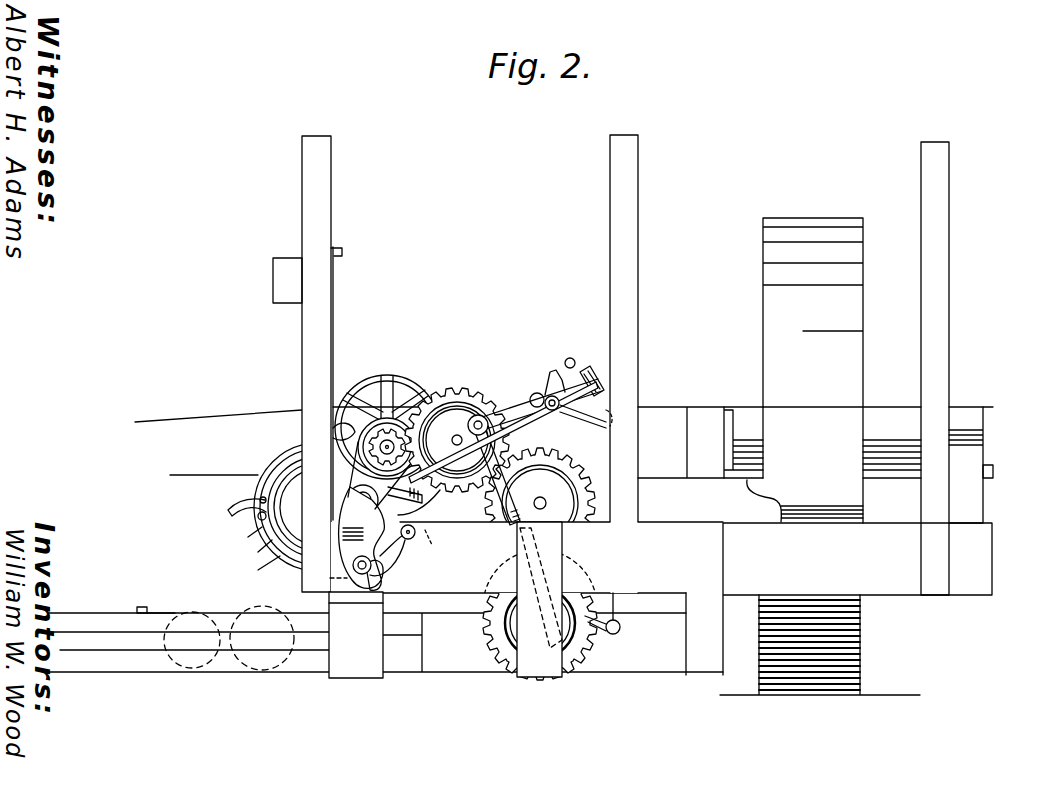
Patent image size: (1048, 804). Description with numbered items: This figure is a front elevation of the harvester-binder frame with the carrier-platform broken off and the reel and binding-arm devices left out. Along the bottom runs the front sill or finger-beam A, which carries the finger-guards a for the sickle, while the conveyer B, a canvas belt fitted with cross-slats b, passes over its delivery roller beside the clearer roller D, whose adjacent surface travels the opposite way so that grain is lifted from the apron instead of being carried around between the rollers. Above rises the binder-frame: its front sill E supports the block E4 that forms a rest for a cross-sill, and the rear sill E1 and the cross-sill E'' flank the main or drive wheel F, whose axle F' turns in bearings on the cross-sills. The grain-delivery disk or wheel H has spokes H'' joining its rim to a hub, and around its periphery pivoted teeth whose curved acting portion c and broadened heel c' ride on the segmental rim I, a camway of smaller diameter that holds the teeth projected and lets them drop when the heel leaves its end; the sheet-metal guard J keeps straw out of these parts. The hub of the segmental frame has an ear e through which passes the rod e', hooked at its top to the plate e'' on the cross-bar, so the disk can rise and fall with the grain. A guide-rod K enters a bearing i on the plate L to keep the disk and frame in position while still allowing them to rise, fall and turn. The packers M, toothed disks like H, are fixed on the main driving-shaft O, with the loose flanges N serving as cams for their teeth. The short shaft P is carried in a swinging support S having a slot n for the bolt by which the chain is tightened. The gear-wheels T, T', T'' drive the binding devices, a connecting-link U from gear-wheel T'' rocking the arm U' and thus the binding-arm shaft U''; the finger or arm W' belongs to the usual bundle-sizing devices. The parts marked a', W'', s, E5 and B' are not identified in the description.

The front sill or finger-beam A is at (384, 642).
The conveyer B is at (161, 602).
The cross-slats b is at (140, 602).
The acting portion of tooth c is at (247, 500).
The heel of tooth c' is at (192, 640).
The clearer roller D is at (262, 638).
The ear or projection e is at (277, 446).
The rod e' is at (342, 383).
The plate e'' is at (349, 251).
The finger-guards a is at (625, 365).
The block a' is at (287, 280).
The disk or wheel H is at (318, 506).
The arms or spokes H'' is at (290, 511).
The guard J is at (247, 535).
The segmental rim or flange I is at (259, 549).
The short shaft P is at (316, 531).
The packers M is at (386, 378).
The flanges N is at (374, 441).
The main driving-shaft O is at (385, 438).
The finger or arm W' is at (428, 454).
The gear wheel W'' is at (457, 425).
The gear-wheel T is at (457, 440).
The gear-wheel T' is at (540, 503).
The gear-wheel T'' is at (540, 615).
The connecting-link U is at (536, 521).
The arm U' is at (503, 432).
The binding-arm shaft U'' is at (571, 386).
The plate or support L is at (362, 538).
The swinging support S is at (377, 486).
The pawl s is at (392, 550).
The slot n is at (362, 568).
The guide-rod K is at (420, 503).
The bearing or box i is at (428, 540).
The front sill of binder-frame E is at (839, 541).
The rear sill E1 is at (700, 442).
The block E4 is at (784, 501).
The box section E5 is at (730, 442).
The cross-sill E'' is at (966, 465).
The main or drive wheel F is at (813, 370).
The axle F' is at (892, 446).
The bracket B' is at (995, 469).